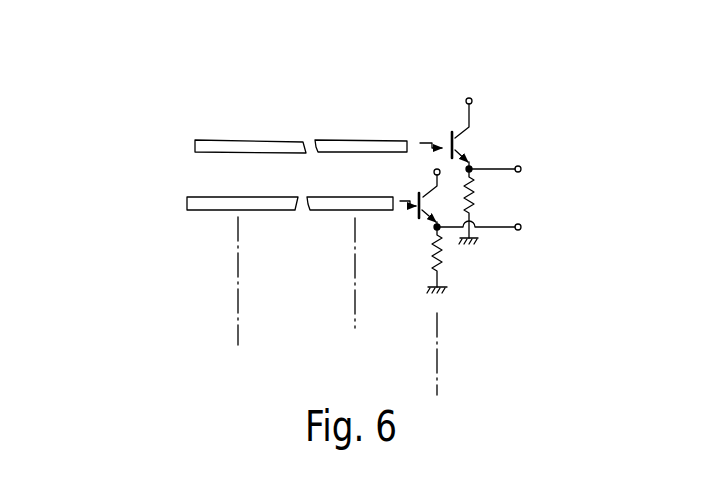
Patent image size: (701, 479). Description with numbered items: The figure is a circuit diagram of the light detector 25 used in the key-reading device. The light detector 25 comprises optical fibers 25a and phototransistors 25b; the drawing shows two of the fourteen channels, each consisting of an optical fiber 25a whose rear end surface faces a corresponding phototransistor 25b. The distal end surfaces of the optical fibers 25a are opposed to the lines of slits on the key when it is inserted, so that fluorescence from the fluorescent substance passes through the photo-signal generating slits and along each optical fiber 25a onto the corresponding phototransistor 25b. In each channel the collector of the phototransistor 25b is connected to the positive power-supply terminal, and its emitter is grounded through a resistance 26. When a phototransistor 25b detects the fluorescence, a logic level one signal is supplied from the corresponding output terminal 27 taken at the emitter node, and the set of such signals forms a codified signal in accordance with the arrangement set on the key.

The light detector 25 is at (289, 115).
The optical fiber 25a is at (357, 138).
The phototransistor 25b is at (461, 144).
The resistance 26 is at (476, 204).
The output terminal 27 is at (522, 172).